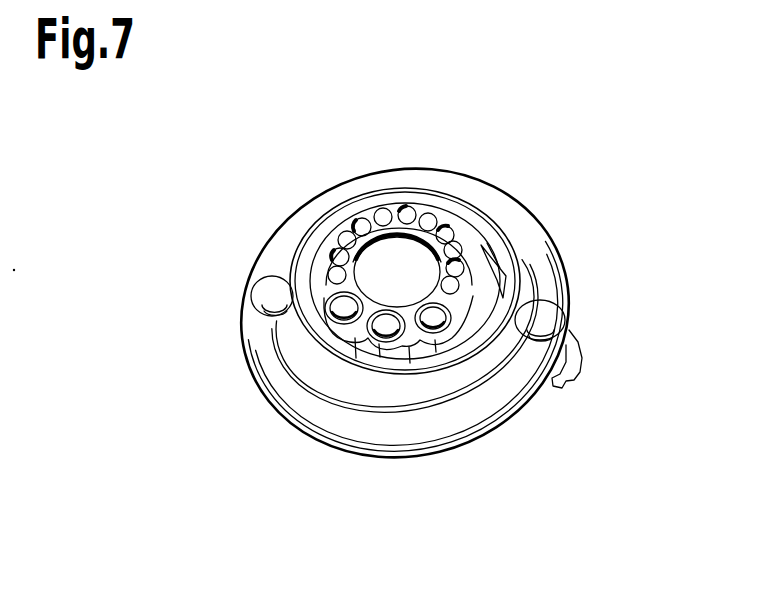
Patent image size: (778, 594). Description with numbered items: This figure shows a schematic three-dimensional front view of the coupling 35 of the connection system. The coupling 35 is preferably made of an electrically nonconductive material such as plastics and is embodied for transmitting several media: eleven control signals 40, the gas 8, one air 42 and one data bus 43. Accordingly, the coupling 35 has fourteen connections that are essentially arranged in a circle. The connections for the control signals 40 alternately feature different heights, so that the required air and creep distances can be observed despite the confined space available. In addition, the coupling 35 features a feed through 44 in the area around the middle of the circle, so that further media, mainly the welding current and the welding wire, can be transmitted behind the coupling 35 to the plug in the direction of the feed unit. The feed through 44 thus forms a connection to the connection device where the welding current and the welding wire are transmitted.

The coupling 35 is at (608, 132).
The control signals 40 is at (400, 212).
The feed through 44 is at (396, 275).
The data bus 43 is at (345, 312).
The gas 8 is at (385, 327).
The air 42 is at (432, 318).